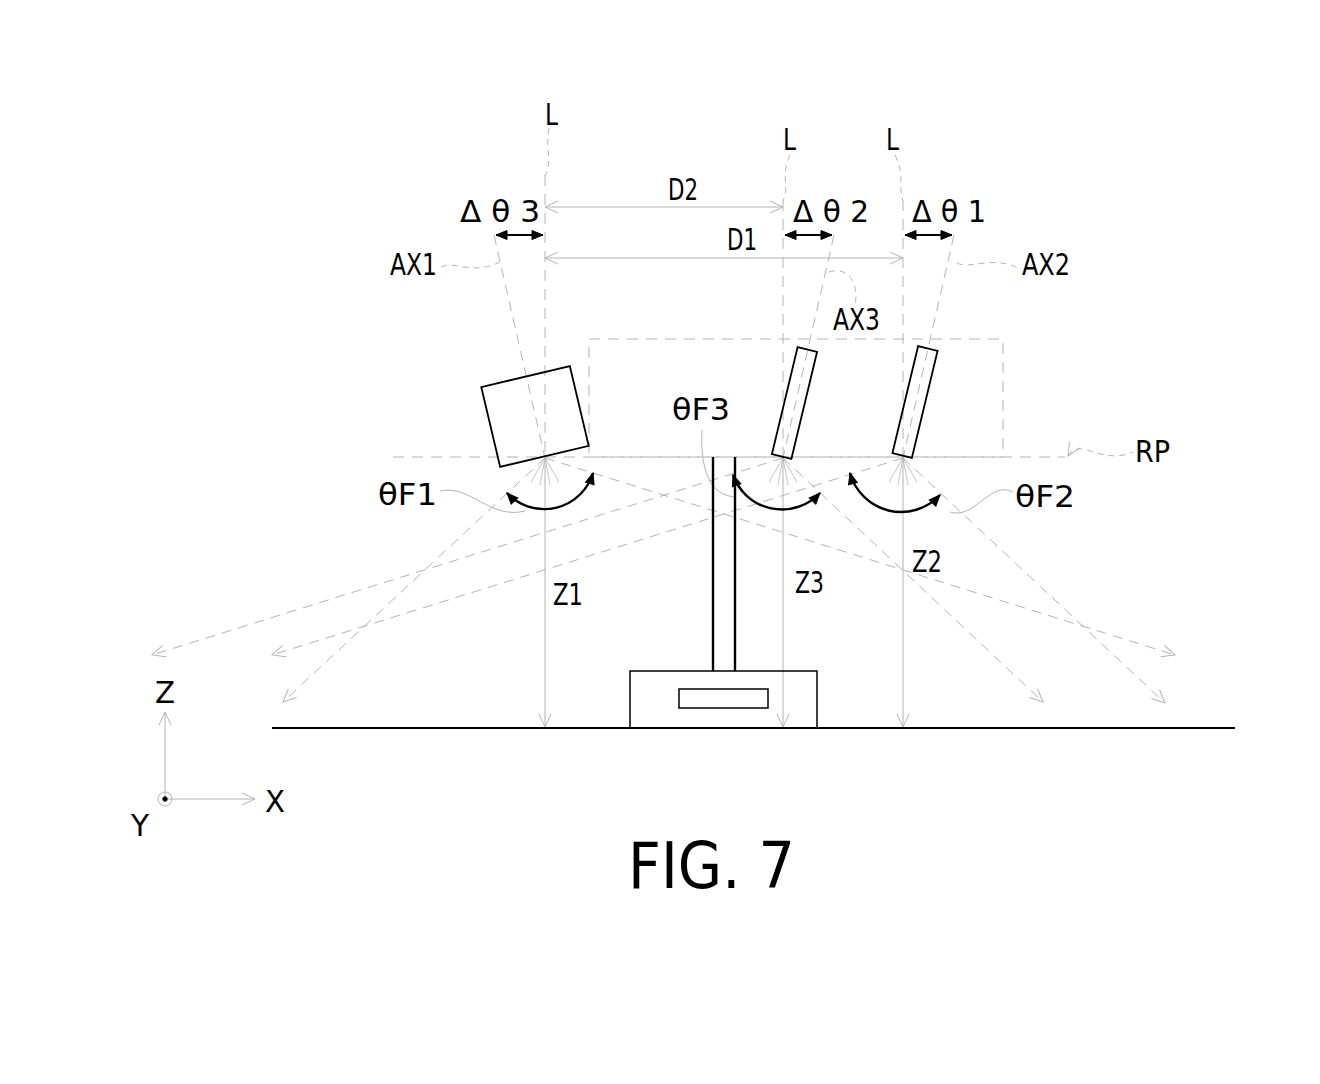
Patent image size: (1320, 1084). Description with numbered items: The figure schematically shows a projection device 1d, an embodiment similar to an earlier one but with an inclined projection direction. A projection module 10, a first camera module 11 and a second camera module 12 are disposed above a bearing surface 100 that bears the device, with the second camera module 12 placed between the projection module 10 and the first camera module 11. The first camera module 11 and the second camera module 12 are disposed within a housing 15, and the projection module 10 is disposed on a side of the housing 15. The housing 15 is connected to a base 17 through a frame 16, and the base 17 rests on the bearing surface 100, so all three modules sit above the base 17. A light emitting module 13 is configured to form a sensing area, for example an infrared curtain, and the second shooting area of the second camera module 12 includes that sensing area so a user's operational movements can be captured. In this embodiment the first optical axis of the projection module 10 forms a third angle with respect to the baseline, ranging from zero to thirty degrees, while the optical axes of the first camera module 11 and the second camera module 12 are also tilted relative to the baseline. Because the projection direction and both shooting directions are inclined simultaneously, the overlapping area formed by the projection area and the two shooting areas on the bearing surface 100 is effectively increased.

The projection device 1d is at (350, 190).
The projection module 10 is at (497, 403).
The first camera module 11 is at (930, 389).
The second camera module 12 is at (811, 387).
The light emitting module 13 is at (722, 706).
The housing 15 is at (985, 338).
The frame 16 is at (725, 632).
The base 17 is at (806, 712).
The bearing surface 100 is at (1220, 727).